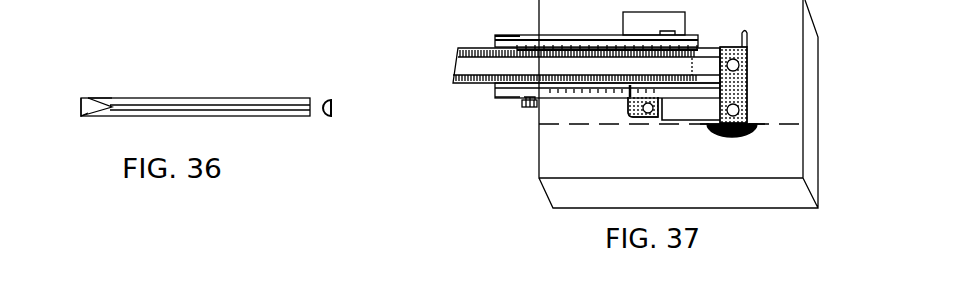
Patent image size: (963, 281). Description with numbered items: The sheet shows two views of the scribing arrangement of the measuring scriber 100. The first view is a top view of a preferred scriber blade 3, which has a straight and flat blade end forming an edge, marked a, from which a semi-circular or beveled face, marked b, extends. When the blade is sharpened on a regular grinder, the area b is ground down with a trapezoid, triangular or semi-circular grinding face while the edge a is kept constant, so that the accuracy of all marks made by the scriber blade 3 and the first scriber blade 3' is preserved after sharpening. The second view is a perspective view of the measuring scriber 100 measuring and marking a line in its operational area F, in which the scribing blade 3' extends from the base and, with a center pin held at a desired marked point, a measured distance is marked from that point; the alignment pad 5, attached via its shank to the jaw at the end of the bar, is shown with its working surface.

In FIG. 36, the edge a is at (81, 100).
In FIG. 36, the ground area b is at (99, 98).
In FIG. 36, the scriber blade 3 is at (206, 73).
In FIG. 37, the alignment pad 5 is at (754, 122).
In FIG. 37, the first scriber blade 3' is at (622, 134).
In FIG. 37, the measuring scriber 100 is at (468, 113).